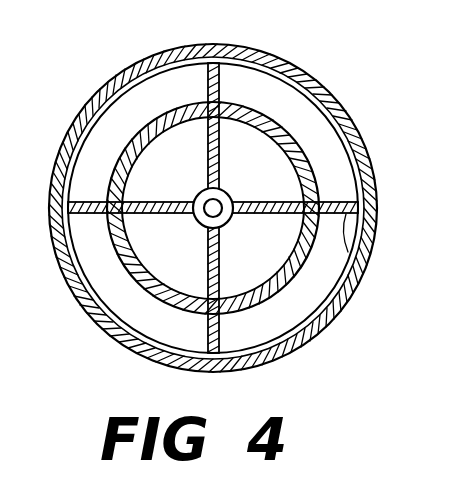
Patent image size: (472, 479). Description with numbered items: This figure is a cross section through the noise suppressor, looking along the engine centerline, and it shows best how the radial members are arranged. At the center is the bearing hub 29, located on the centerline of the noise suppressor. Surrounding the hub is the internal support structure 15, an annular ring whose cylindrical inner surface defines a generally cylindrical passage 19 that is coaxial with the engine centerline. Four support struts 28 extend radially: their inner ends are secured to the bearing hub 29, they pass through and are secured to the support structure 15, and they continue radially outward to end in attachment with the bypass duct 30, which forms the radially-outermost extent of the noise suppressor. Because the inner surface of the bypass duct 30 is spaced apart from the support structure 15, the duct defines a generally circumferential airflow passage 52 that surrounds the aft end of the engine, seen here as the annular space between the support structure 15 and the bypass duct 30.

The internal support structure 15 is at (252, 108).
The cylindrical passage 19 is at (178, 263).
The support struts 28 is at (197, 82).
The bearing hub 29 is at (220, 187).
The bypass duct 30 is at (112, 337).
The airflow passage 52 is at (313, 292).